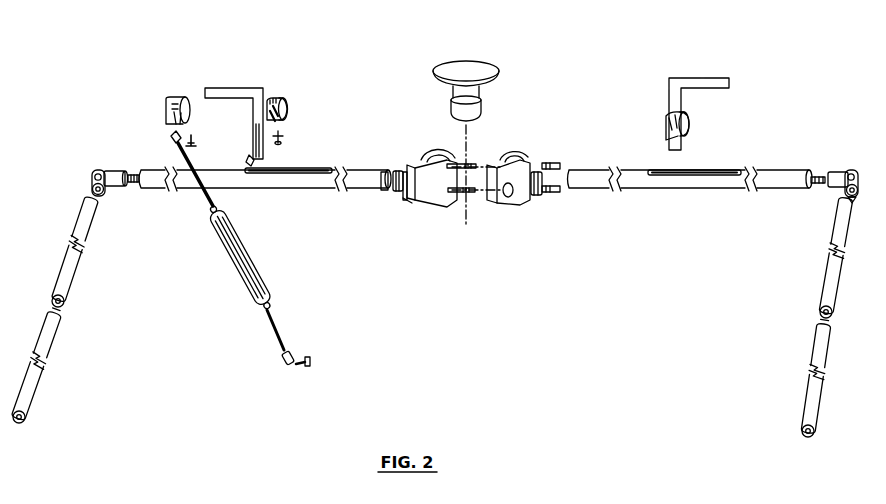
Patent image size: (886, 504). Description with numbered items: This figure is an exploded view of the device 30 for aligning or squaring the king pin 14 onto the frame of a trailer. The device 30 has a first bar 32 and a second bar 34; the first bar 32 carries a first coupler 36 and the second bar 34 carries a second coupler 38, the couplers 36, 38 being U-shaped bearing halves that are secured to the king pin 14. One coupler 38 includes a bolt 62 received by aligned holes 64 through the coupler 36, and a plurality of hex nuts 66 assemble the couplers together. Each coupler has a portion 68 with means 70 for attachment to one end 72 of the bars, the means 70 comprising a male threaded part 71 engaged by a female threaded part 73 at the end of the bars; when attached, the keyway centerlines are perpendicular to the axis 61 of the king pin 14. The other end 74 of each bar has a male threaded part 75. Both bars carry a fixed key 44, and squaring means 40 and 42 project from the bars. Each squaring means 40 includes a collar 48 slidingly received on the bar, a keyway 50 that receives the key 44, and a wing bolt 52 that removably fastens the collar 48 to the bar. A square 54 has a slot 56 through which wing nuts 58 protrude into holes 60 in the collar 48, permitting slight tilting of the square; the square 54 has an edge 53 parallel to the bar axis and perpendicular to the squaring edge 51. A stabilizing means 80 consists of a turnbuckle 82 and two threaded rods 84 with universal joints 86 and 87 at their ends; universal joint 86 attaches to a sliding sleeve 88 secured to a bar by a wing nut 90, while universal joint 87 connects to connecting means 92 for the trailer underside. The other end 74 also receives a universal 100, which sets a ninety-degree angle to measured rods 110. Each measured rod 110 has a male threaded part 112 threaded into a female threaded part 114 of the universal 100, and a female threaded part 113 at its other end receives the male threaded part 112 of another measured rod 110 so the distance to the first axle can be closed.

The king pin 14 is at (483, 107).
The device 30 is at (472, 194).
The first bar 32 is at (589, 185).
The second bar 34 is at (318, 190).
The first coupler 36 is at (520, 161).
The second coupler 38 is at (424, 158).
The squaring means 40 is at (690, 84).
The squaring means 42 is at (253, 102).
The key 44 is at (278, 175).
The collar 48 is at (282, 98).
The keyway 50 is at (288, 107).
The squaring edge 51 is at (669, 90).
The wing bolt 52 is at (279, 136).
The edge 53 is at (686, 77).
The square 54 is at (722, 79).
The slot 56 is at (256, 138).
The wing nuts 58 is at (250, 157).
The holes 60 is at (278, 119).
The axis 61 is at (469, 146).
The bolt 62 is at (452, 163).
The aligned holes 64 is at (509, 198).
The hex nuts 66 is at (555, 164).
The portion 68 is at (405, 192).
The means for attachment 70 is at (392, 160).
The male threaded part 71 is at (396, 191).
The one end 72 is at (573, 172).
The female threaded part 73 is at (387, 166).
The other end 74 is at (131, 174).
The male threaded part 75 is at (132, 190).
The stabilizing means 80 is at (226, 234).
The turnbuckle 82 is at (231, 263).
The threaded rods 84 is at (205, 203).
The universal joint 86 is at (171, 138).
The universal joint 87 is at (287, 364).
The sliding sleeve 88 is at (165, 104).
The wing nut 90 is at (196, 146).
The connecting means 92 is at (301, 368).
The universal 100 is at (810, 274).
The measured rods 110 is at (832, 270).
The male threaded part 112 is at (847, 206).
The female threaded part 113 is at (822, 310).
The female threaded part 114 is at (826, 202).